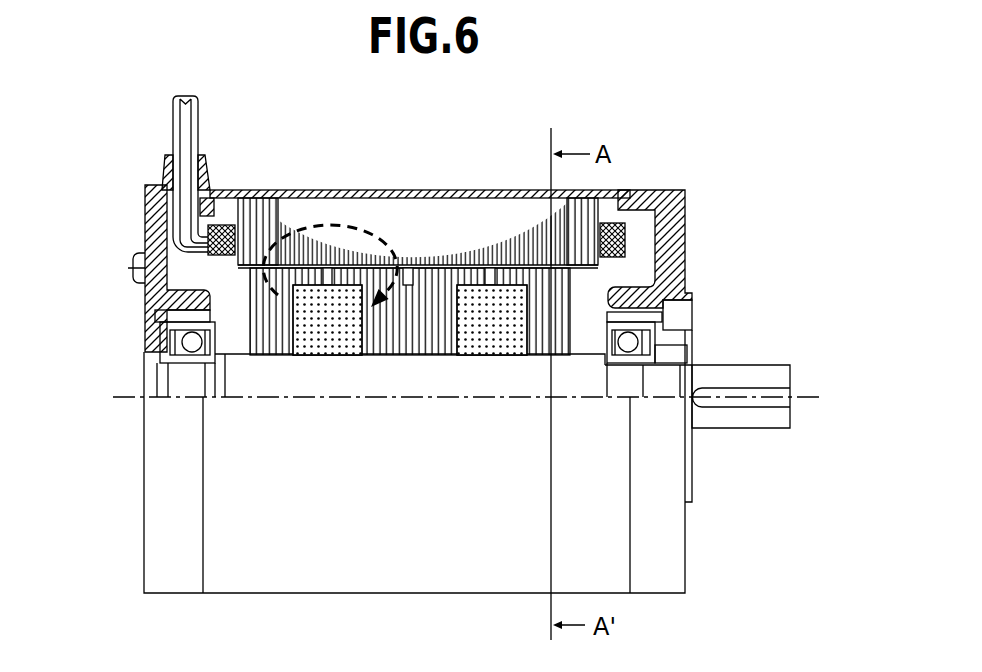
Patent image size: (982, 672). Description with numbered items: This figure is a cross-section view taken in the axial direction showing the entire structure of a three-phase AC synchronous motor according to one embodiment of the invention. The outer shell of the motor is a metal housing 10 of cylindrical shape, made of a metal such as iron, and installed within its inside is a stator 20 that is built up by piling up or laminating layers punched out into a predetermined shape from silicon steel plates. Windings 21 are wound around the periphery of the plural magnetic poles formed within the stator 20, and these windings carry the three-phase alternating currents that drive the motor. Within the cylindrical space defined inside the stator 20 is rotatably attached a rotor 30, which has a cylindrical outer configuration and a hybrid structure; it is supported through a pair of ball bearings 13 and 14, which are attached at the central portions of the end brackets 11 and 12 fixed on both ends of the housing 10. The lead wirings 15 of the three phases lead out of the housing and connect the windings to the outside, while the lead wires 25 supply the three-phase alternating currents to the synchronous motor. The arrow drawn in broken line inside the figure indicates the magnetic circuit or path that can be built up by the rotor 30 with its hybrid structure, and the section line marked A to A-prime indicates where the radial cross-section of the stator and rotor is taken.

The metal housing 10 is at (358, 191).
The end bracket 11 is at (162, 221).
The end bracket 12 is at (668, 275).
The ball bearing 13 is at (180, 325).
The ball bearing 14 is at (630, 325).
The lead wirings 15 is at (173, 131).
The stator 20 is at (468, 220).
The windings 21 is at (625, 238).
The lead wires 25 is at (740, 373).
The rotor 30 is at (241, 282).